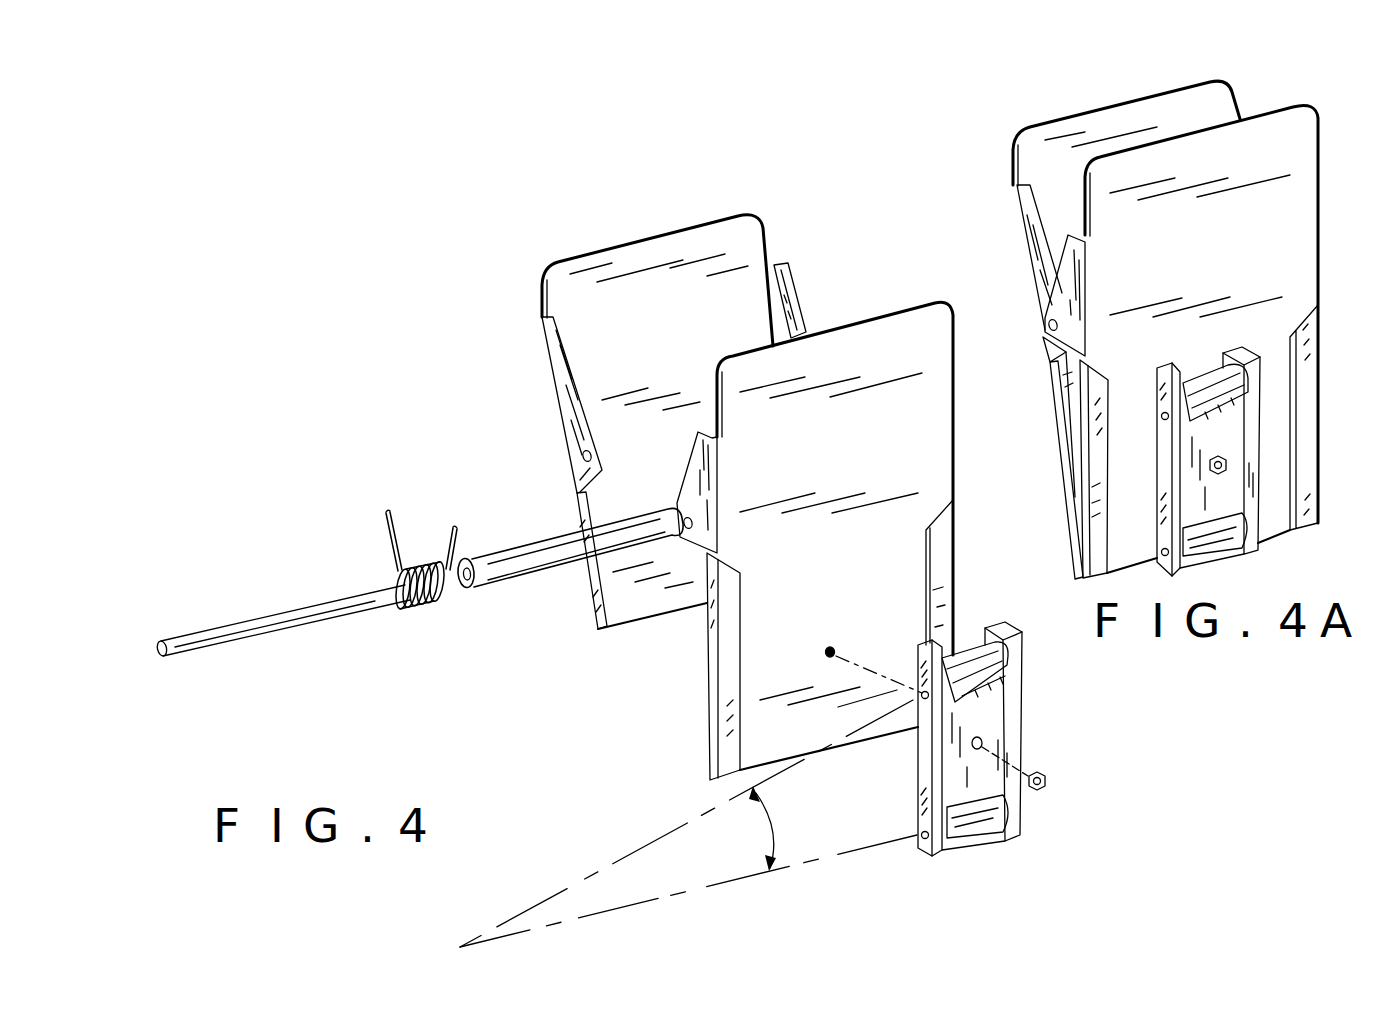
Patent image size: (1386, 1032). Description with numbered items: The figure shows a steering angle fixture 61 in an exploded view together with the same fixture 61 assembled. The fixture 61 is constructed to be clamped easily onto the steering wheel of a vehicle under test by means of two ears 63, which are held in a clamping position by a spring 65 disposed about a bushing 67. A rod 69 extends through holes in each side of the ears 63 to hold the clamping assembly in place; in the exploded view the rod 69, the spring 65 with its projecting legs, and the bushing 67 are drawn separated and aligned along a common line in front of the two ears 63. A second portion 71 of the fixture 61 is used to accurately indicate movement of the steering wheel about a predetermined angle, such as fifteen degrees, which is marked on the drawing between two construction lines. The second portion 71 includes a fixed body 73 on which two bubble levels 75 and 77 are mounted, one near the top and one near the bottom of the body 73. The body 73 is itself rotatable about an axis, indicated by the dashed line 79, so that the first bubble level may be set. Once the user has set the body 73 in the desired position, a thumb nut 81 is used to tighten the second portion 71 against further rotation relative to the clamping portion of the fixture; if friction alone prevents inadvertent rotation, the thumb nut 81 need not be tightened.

The steering angle fixture 61 is at (600, 695).
The ears 63 is at (673, 313).
The spring 65 is at (432, 608).
The bushing 67 is at (526, 581).
The rod 69 is at (268, 633).
The second portion 71 is at (1035, 701).
The fixed body 73 is at (1003, 728).
The bubble level 75 is at (972, 838).
The bubble level 77 is at (968, 650).
The axis 79 is at (1025, 753).
The thumb nut 81 is at (1046, 779).